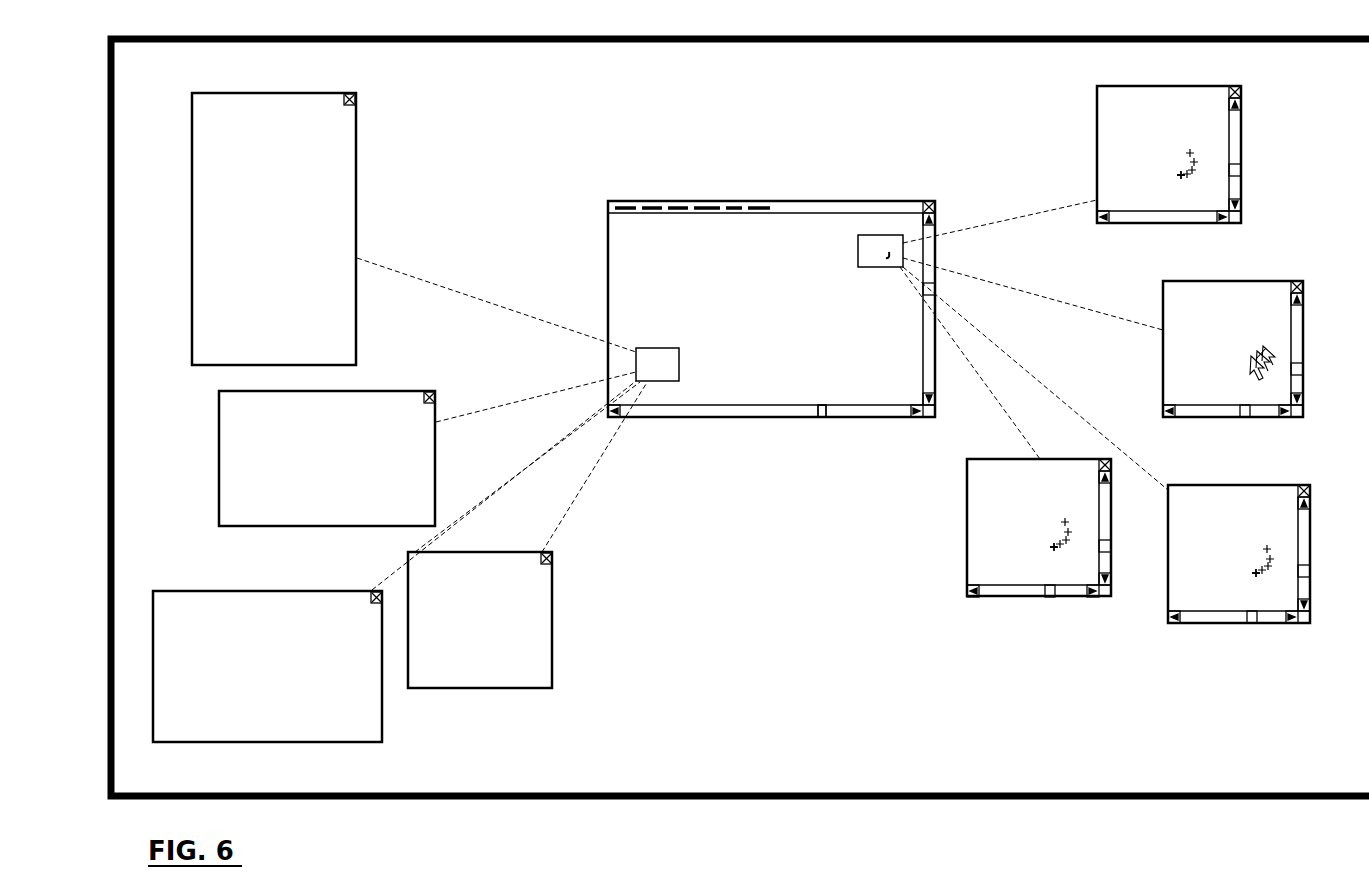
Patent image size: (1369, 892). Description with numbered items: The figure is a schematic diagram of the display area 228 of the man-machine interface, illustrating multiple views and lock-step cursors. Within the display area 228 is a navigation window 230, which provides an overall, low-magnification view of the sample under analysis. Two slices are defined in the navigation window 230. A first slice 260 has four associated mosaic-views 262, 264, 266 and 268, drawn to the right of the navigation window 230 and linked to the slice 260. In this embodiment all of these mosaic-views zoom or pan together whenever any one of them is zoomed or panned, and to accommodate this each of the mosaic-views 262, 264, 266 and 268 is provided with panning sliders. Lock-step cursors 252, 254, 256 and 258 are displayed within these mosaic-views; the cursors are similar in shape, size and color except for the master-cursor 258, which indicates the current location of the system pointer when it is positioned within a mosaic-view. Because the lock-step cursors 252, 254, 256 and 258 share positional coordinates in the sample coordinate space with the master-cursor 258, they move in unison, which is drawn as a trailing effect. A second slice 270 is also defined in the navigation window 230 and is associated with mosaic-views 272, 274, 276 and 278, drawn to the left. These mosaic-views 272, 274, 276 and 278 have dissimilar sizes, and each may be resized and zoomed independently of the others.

The display area 228 is at (686, 774).
The navigation window 230 is at (630, 233).
The lock-step cursor 252 is at (1180, 163).
The lock-step cursor 254 is at (1250, 570).
The lock-step cursor 256 is at (1044, 550).
The master-cursor 258 is at (1246, 362).
The slice 260 is at (870, 245).
The mosaic-view 262 is at (1112, 110).
The mosaic-view 264 is at (1235, 503).
The mosaic-view 266 is at (972, 536).
The mosaic-view 268 is at (1185, 295).
The slice 270 is at (667, 372).
The mosaic-view 272 is at (534, 676).
The mosaic-view 274 is at (370, 732).
The mosaic-view 276 is at (230, 498).
The mosaic-view 278 is at (332, 120).